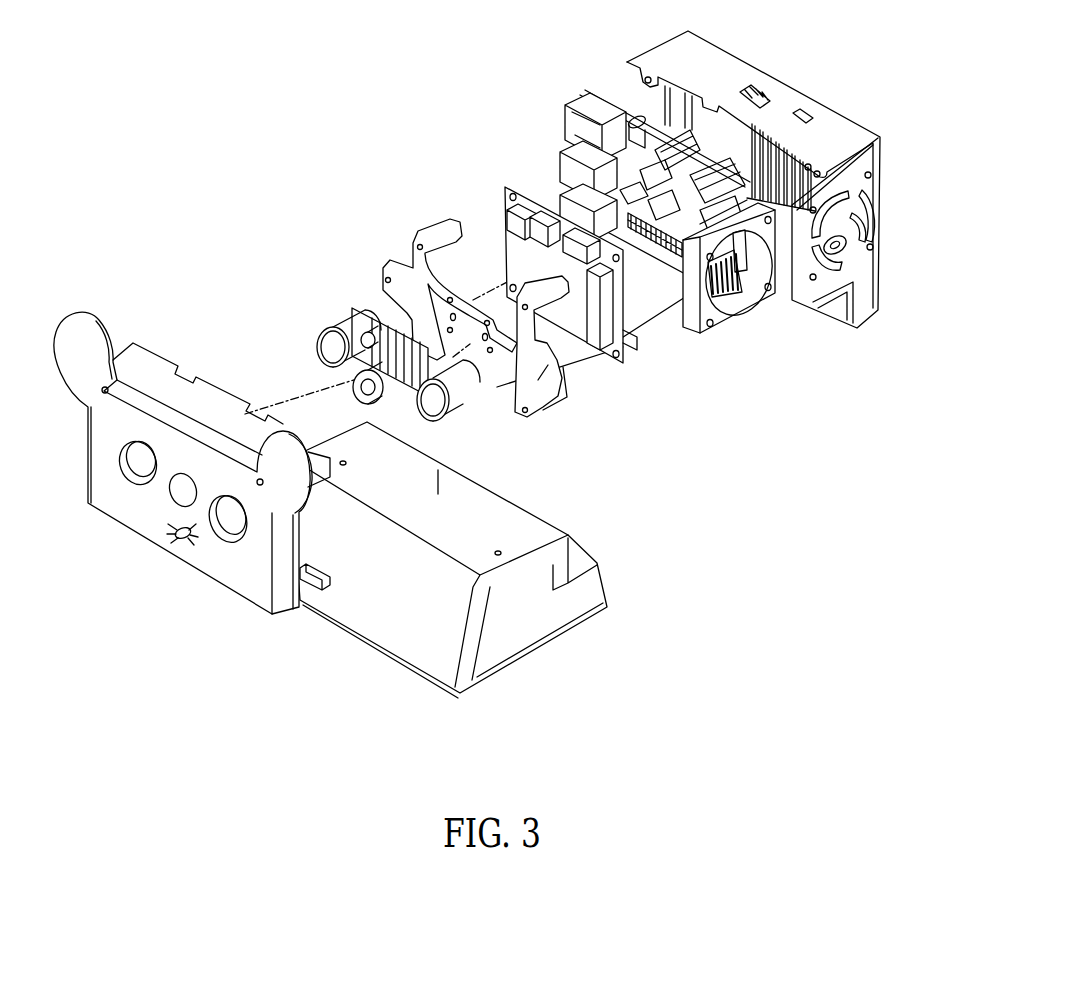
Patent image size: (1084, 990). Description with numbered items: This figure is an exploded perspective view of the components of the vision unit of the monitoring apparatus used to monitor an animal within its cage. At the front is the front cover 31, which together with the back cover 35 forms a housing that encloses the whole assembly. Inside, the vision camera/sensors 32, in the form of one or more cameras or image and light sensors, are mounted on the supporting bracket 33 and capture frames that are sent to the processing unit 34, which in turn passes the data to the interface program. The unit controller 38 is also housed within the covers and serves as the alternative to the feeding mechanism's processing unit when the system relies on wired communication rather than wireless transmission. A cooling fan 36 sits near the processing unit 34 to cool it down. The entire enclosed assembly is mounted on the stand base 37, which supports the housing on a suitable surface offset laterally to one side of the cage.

The front cover 31 is at (140, 367).
The vision camera/sensors 32 is at (357, 310).
The supporting bracket 33 is at (437, 223).
The processing unit 34 is at (590, 95).
The back cover 35 is at (838, 135).
The cooling fan 36 is at (730, 230).
The stand base 37 is at (610, 610).
The unit controller 38 is at (630, 347).